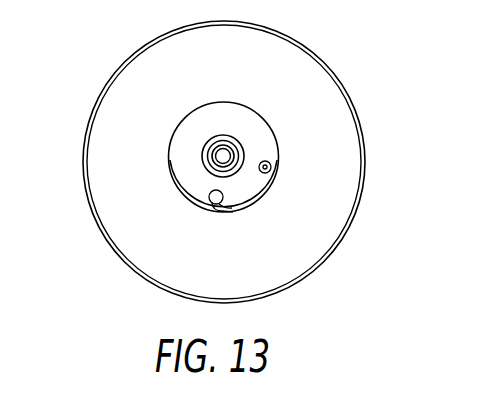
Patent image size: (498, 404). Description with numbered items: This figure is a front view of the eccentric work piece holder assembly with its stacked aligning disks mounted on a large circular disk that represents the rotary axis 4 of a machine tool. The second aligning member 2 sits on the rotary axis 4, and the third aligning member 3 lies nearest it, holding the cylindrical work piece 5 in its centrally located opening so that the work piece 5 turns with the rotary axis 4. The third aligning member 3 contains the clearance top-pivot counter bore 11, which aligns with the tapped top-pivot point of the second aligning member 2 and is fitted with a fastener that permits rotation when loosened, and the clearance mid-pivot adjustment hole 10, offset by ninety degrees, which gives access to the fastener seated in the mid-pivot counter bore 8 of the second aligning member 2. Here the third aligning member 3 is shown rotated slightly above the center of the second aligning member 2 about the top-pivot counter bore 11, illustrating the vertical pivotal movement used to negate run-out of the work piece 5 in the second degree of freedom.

The second aligning member 2 is at (200, 206).
The third aligning member 3 is at (270, 125).
The rotary axis 4 is at (107, 80).
The work piece 5 is at (228, 134).
The mid-pivot counter bore 8 is at (227, 217).
The mid-pivot adjustment hole 10 is at (207, 193).
The top-pivot counter bore 11 is at (268, 166).